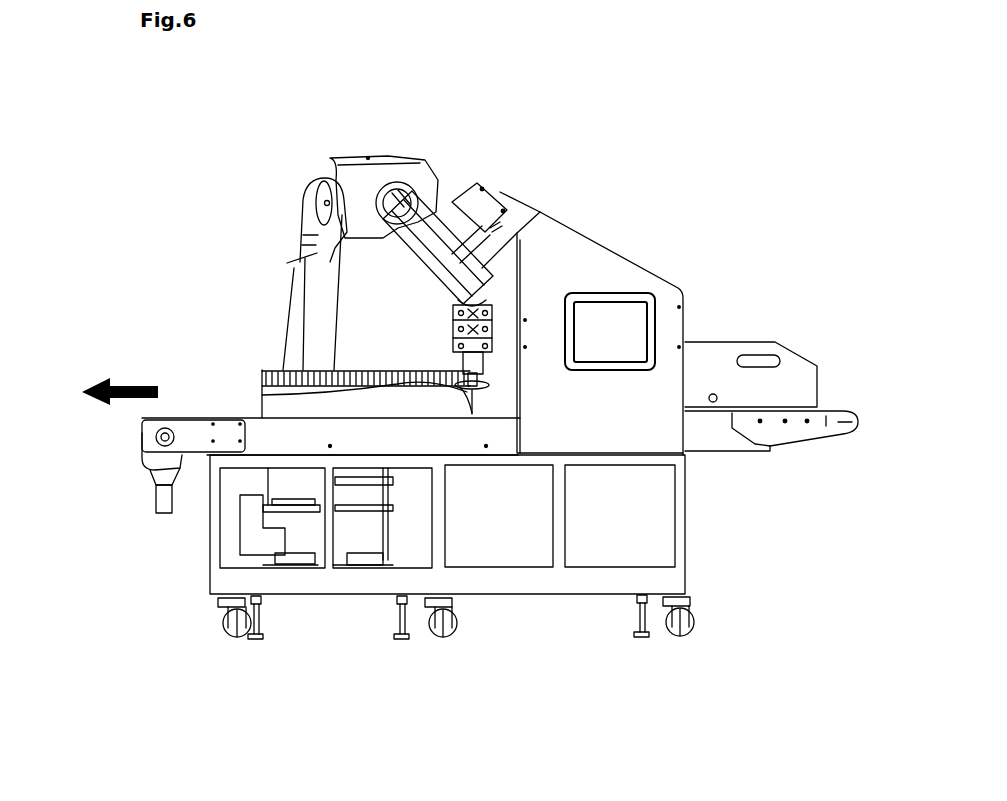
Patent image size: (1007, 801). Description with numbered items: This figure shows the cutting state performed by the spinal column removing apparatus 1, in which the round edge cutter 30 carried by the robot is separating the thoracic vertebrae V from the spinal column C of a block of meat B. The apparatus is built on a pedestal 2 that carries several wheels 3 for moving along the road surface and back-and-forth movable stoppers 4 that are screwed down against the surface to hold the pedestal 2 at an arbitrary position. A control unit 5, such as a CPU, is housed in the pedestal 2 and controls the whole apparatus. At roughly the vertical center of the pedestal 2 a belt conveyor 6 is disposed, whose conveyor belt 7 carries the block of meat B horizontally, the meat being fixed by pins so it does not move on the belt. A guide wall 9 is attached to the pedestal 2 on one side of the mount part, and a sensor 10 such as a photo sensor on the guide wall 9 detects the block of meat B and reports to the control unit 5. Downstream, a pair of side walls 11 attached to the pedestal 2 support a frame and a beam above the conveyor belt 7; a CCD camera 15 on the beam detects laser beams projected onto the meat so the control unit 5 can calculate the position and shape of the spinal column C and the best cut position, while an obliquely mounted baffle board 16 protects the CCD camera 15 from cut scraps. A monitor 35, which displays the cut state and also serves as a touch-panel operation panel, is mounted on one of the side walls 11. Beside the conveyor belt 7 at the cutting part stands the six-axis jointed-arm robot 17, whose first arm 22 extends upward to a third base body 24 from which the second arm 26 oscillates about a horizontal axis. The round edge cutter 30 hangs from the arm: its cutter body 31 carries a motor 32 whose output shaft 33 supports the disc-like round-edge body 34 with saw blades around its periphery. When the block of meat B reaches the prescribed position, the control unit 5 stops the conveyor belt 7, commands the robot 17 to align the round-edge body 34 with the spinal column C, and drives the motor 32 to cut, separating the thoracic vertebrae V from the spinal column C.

The spinal column removing apparatus 1 is at (625, 212).
The pedestal 2 is at (532, 580).
The wheels 3 is at (437, 633).
The back-and-forth movable stoppers 4 is at (262, 615).
The control unit 5 is at (252, 535).
The belt conveyor 6 is at (713, 437).
The conveyor belt 7 is at (257, 417).
The guide wall 9 is at (713, 357).
The sensor 10 is at (715, 398).
The side walls 11 is at (592, 263).
The CCD camera 15 is at (482, 183).
The baffle board 16 is at (500, 257).
The six-axis jointed-arm robot 17 is at (293, 338).
The first arm 22 is at (293, 288).
The third base body 24 is at (357, 177).
The second arm 26 is at (428, 232).
The round edge cutter 30 is at (453, 297).
The cutter body 31 is at (453, 312).
The motor 32 is at (453, 332).
The output shaft 33 is at (463, 360).
The round-edge body 34 is at (462, 403).
The monitor 35 is at (633, 332).
The block of meat B is at (283, 402).
The thoracic vertebrae V is at (363, 370).
The spinal column C is at (385, 370).